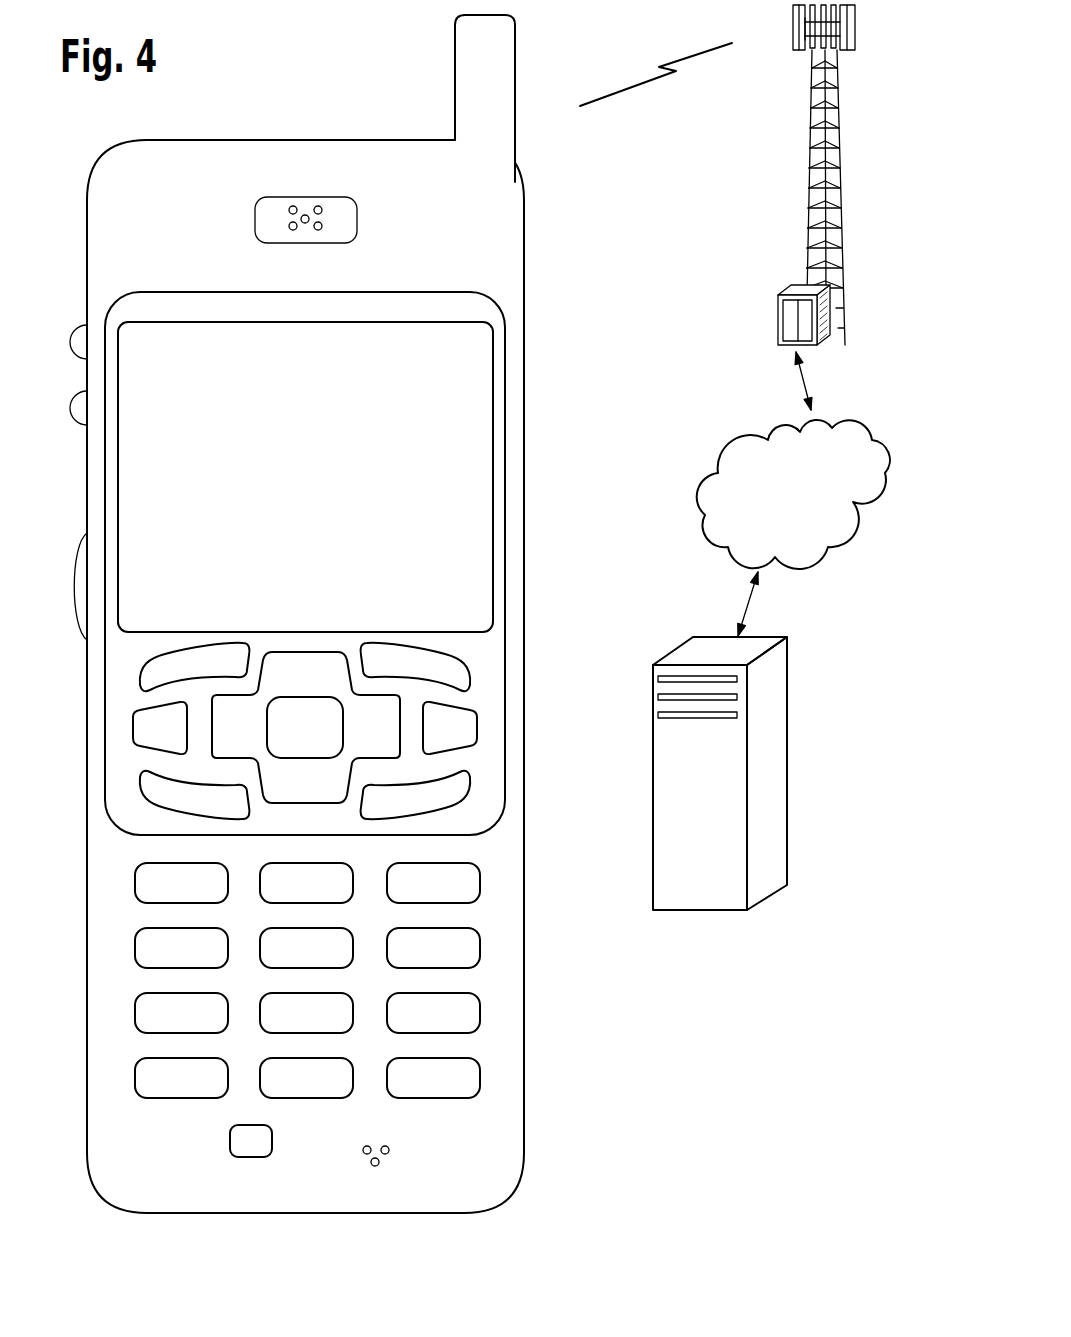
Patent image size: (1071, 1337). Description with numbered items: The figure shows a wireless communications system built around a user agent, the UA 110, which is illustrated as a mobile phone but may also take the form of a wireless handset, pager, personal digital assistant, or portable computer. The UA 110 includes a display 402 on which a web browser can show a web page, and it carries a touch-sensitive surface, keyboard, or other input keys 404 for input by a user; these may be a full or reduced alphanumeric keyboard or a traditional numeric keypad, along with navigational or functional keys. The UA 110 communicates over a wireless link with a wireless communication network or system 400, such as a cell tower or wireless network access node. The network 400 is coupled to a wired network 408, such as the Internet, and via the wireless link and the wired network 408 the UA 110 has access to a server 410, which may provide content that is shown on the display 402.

The UA 110 is at (338, 630).
The wireless communication network or system 400 is at (808, 191).
The display 402 is at (493, 333).
The input keys 404 is at (524, 640).
The wired network 408 is at (720, 546).
The server 410 is at (698, 911).